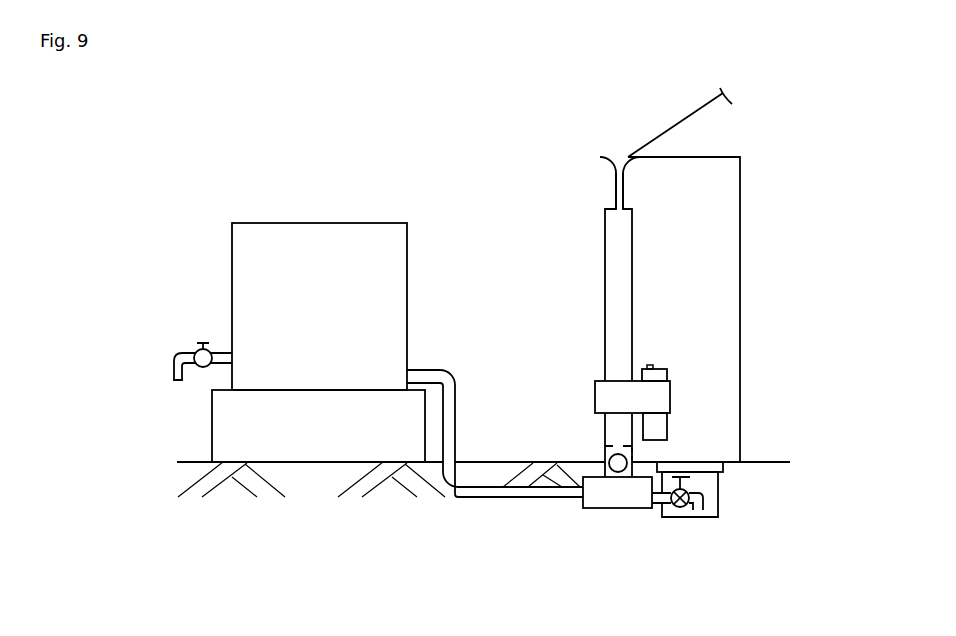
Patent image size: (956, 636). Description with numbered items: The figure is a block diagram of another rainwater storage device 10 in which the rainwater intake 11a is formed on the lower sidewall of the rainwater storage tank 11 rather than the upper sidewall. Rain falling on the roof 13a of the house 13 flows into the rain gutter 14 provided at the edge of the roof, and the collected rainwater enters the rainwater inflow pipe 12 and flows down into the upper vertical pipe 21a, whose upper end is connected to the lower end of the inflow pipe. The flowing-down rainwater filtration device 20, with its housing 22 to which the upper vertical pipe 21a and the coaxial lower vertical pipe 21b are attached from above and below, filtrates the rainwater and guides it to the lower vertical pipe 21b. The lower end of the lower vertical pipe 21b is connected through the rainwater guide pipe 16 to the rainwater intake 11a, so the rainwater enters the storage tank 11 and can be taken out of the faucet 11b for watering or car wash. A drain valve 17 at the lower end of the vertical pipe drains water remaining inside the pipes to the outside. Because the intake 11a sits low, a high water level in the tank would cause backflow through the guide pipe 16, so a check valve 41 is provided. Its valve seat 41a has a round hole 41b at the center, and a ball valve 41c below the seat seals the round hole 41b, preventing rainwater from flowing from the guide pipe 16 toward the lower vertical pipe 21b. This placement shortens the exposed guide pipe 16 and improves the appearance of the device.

The rainwater storage device 10 is at (210, 169).
The rainwater storage tank 11 is at (232, 297).
The rainwater intake 11a is at (425, 368).
The faucet 11b is at (182, 348).
The rainwater inflow pipe 12 is at (613, 197).
The house 13 is at (792, 245).
The roof 13a is at (703, 108).
The rain gutter 14 is at (602, 170).
The rainwater guide pipe 16 is at (455, 418).
The drain valve 17 is at (682, 507).
The flowing-down rainwater filtration device 20 is at (666, 361).
The upper vertical pipe 21a is at (635, 238).
The lower vertical pipe 21b is at (633, 443).
The housing 22 is at (672, 405).
The check valve 41 is at (596, 453).
The valve seat 41a is at (604, 446).
The round hole 41b is at (633, 450).
The ball valve 41c is at (633, 458).